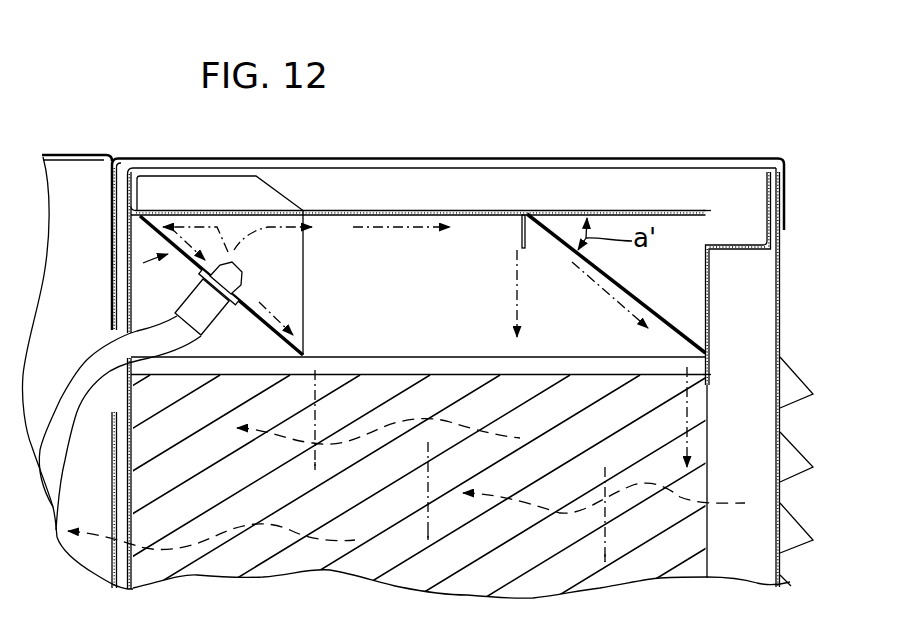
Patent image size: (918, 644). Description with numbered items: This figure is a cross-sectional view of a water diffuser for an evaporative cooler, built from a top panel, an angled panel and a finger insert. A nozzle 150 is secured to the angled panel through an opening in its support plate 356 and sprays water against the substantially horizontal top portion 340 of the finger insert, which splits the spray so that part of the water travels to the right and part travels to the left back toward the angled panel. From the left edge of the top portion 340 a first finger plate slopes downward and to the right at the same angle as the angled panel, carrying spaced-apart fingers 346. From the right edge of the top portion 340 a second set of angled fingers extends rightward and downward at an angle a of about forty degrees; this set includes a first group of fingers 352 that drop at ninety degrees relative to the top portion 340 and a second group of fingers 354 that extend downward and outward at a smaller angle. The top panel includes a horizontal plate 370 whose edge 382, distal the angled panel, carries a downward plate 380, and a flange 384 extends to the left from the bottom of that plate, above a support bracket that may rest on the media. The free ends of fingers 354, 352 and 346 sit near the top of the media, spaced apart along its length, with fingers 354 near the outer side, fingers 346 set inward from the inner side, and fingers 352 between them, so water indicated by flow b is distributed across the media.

The nozzle 150 is at (157, 299).
The top portion 340 is at (362, 217).
The fingers 346 is at (250, 305).
The first group of fingers 352 is at (528, 234).
The second group of fingers 354 is at (616, 283).
The support plate 356 is at (141, 218).
The horizontal plate 370 is at (480, 210).
The plate 380 is at (706, 313).
The edge 382 is at (707, 211).
The flange 384 is at (706, 374).
The angle a is at (188, 210).
The air flow b is at (515, 246).